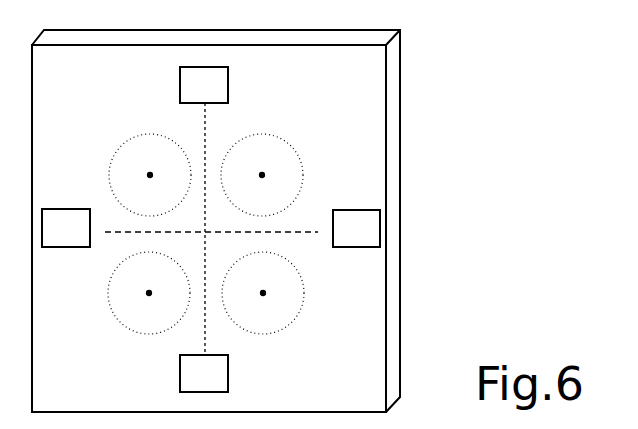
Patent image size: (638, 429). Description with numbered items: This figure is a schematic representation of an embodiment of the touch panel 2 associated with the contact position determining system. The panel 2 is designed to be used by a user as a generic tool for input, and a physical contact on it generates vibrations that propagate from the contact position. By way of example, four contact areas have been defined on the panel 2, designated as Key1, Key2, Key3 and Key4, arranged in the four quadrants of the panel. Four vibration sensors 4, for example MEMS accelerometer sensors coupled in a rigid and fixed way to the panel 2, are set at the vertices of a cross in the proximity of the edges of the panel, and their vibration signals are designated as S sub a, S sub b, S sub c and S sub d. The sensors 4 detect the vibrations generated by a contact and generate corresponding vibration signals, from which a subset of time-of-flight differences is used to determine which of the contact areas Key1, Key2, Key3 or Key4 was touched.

The touch panel 2 is at (372, 143).
The vibration sensors 4 is at (217, 80).
The contact area Key1 is at (150, 175).
The contact area Key2 is at (262, 175).
The contact area Key3 is at (263, 293).
The contact area Key4 is at (149, 293).